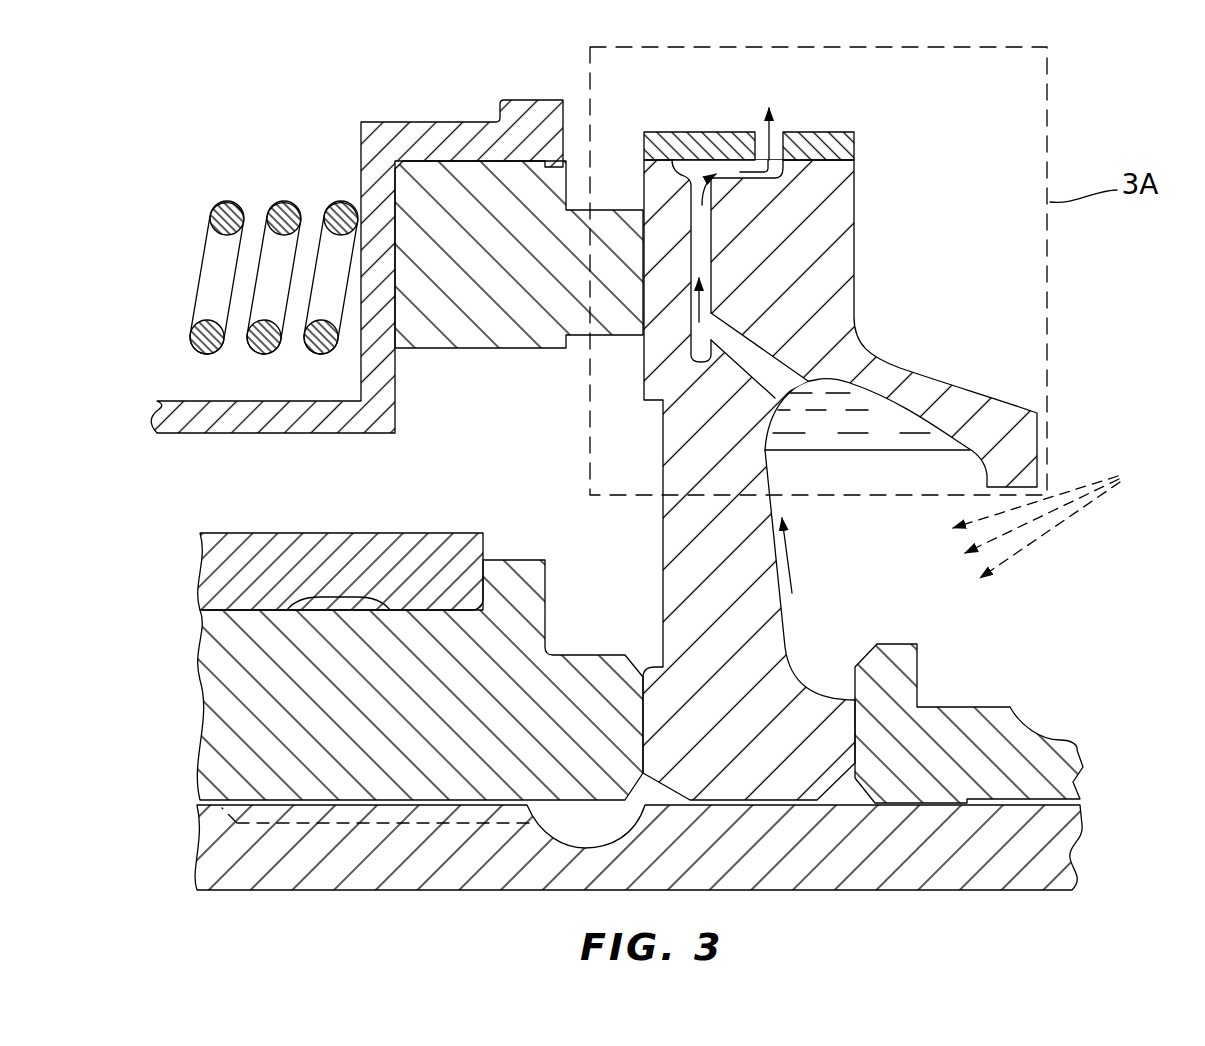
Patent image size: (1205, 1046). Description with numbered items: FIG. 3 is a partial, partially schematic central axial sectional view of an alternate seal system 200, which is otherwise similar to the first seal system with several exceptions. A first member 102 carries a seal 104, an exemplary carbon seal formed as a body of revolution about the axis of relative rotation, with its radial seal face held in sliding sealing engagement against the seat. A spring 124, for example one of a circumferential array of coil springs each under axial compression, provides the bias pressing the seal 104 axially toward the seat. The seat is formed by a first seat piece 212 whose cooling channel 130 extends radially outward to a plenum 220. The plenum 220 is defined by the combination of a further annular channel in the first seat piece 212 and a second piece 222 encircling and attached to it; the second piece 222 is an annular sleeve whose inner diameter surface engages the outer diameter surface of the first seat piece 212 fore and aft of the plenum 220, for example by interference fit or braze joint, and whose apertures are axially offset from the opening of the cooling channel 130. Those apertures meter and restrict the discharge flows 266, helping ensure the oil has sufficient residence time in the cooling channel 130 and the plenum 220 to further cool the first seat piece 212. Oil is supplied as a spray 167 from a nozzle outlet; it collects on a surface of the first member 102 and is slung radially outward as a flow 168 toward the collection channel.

The seal system 200 is at (357, 236).
The first member 102 is at (330, 118).
The seal 104 is at (500, 313).
The spring 124 is at (264, 192).
The plenum 220 is at (724, 165).
The second piece 222 is at (862, 147).
The discharge flows 266 is at (786, 122).
The cooling channel 130 is at (716, 255).
The first seat piece 212 is at (812, 305).
The flow 168 is at (790, 570).
The spray 167 is at (1060, 520).